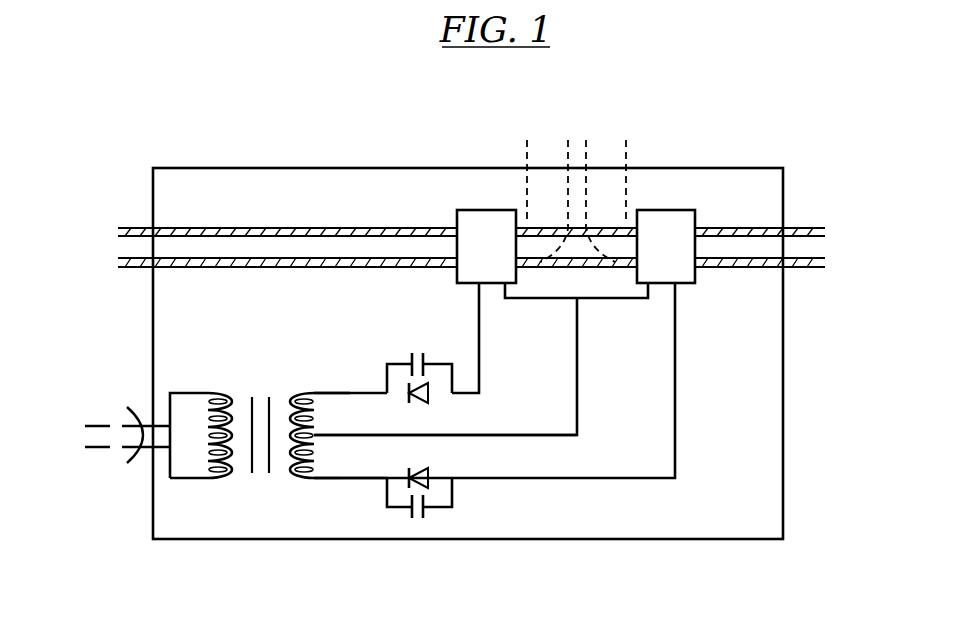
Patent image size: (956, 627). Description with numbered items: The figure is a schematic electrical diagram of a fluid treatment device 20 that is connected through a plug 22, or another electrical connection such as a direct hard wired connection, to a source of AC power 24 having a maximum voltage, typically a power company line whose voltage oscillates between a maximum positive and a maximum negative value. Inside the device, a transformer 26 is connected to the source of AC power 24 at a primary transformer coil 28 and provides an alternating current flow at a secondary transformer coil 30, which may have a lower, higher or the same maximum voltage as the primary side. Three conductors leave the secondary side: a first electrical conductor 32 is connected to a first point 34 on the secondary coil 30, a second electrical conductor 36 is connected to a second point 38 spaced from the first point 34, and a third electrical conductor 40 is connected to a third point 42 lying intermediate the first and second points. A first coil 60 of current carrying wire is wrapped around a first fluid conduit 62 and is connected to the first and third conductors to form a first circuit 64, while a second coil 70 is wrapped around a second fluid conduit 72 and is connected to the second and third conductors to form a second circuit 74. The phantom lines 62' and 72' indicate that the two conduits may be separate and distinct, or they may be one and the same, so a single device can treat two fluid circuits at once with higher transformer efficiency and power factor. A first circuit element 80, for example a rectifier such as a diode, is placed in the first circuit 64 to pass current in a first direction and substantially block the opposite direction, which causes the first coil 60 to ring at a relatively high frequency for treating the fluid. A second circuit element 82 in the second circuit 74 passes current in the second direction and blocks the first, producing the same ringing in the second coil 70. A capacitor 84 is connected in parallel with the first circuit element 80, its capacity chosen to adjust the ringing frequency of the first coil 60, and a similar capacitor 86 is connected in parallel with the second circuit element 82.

The fluid treatment device 20 is at (560, 540).
The plug 22 is at (128, 408).
The source of AC power 24 is at (90, 425).
The transformer 26 is at (242, 448).
The primary transformer coil 28 is at (236, 462).
The secondary transformer coil 30 is at (290, 476).
The first electrical conductor 32 is at (323, 392).
The first point 34 is at (307, 392).
The second electrical conductor 36 is at (333, 480).
The second point 38 is at (305, 480).
The third electrical conductor 40 is at (500, 433).
The third point 42 is at (315, 435).
The first coil 60 is at (468, 210).
The first fluid conduit 62 is at (263, 214).
The phantom lines 62' is at (502, 178).
The first circuit 64 is at (479, 364).
The second coil 70 is at (686, 210).
The second fluid conduit 72 is at (792, 214).
The phantom lines 72' is at (652, 177).
The second circuit 74 is at (675, 365).
The first circuit element 80 is at (427, 400).
The second circuit element 82 is at (428, 475).
The capacitor 84 is at (418, 352).
The capacitor 86 is at (417, 518).